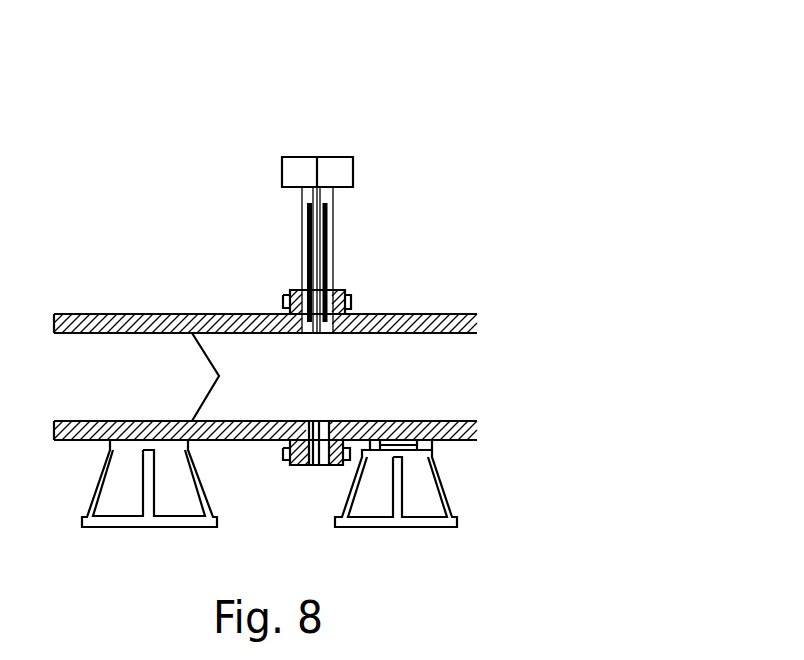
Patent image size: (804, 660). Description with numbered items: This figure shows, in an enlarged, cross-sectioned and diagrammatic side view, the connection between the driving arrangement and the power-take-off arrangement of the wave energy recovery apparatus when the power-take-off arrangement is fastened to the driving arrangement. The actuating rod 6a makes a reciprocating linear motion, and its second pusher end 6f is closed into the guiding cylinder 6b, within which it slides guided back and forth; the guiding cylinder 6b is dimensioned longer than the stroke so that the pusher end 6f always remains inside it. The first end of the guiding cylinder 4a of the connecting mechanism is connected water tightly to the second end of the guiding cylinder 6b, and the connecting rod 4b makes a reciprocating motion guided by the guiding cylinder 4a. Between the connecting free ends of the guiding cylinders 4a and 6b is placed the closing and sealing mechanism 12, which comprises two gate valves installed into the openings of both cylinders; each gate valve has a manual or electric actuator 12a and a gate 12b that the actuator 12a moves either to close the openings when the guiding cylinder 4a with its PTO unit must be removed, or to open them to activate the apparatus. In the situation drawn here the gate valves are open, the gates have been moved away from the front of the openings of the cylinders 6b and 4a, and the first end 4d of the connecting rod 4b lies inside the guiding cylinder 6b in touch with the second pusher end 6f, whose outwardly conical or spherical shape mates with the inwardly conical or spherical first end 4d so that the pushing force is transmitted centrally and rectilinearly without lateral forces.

The closing and sealing mechanism 12 is at (343, 247).
The actuator 12a is at (297, 163).
The gate 12b is at (305, 228).
The guiding cylinder 4a is at (405, 318).
The connecting rod 4b is at (447, 410).
The first end of the connecting rod 4d is at (205, 398).
The actuating rod 6a is at (147, 347).
The guiding cylinder 6b is at (82, 315).
The second pusher end 6f is at (210, 357).